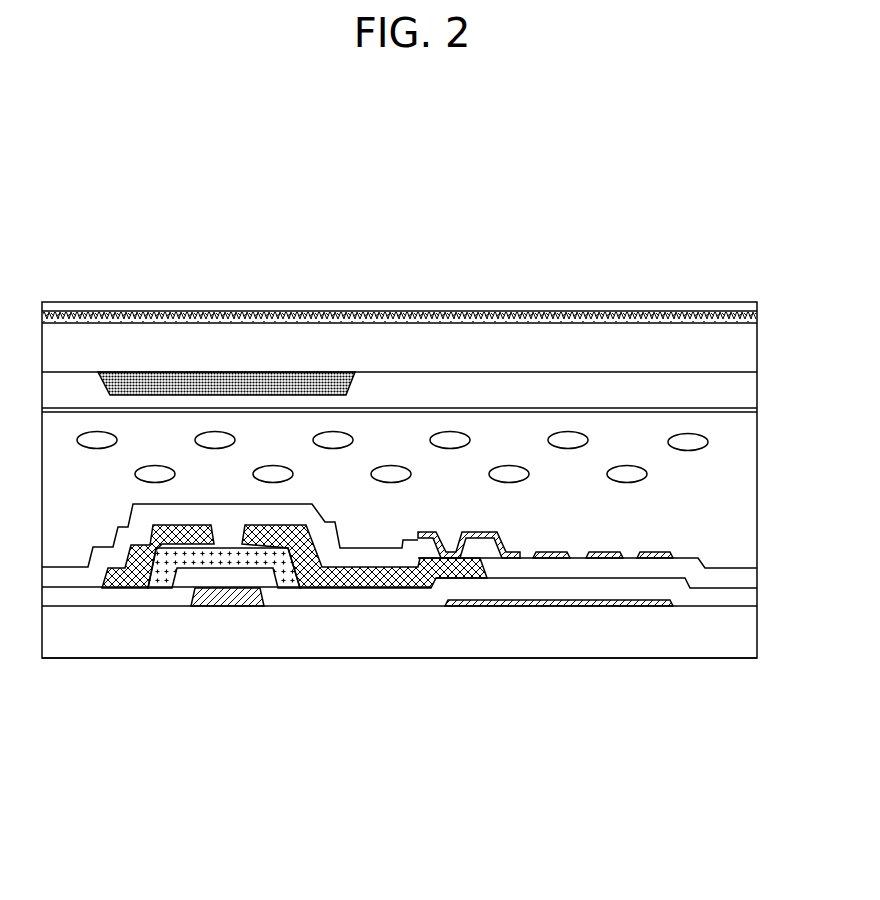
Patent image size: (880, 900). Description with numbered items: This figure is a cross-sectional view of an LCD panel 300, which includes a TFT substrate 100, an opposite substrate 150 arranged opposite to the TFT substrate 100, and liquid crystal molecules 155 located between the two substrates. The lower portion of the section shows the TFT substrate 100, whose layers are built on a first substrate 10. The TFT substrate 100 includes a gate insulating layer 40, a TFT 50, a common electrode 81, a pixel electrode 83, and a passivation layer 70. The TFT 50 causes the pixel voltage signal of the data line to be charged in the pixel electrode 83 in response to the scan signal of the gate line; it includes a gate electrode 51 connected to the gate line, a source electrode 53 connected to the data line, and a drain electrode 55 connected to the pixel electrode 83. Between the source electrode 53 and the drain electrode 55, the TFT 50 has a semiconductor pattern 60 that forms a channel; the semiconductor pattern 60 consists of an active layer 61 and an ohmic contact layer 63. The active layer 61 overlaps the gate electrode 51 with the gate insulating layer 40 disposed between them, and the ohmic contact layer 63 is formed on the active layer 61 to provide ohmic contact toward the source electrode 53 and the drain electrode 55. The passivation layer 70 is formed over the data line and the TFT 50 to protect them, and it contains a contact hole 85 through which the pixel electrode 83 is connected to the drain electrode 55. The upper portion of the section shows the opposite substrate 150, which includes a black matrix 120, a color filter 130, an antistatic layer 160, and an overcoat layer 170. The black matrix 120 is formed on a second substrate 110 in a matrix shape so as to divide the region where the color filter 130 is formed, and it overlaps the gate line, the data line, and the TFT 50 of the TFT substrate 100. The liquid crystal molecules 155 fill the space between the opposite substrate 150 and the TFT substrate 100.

The LCD panel 300 is at (82, 184).
The first substrate 10 is at (413, 642).
The gate insulating layer 40 is at (352, 600).
The TFT 50 is at (85, 748).
The gate electrode 51 is at (228, 600).
The source electrode 53 is at (113, 582).
The drain electrode 55 is at (322, 580).
The semiconductor pattern 60 is at (187, 709).
The active layer 61 is at (160, 582).
The ohmic contact layer 63 is at (143, 580).
The passivation layer 70 is at (724, 580).
The common electrode 81 is at (570, 602).
The pixel electrode 83 is at (656, 556).
The contact hole 85 is at (449, 536).
The TFT substrate 100 is at (770, 630).
The second substrate 110 is at (447, 345).
The black matrix 120 is at (227, 412).
The color filter 130 is at (380, 397).
The opposite substrate 150 is at (770, 375).
The liquid crystal molecules 155 is at (698, 442).
The antistatic layer 160 is at (506, 323).
The overcoat layer 170 is at (575, 311).